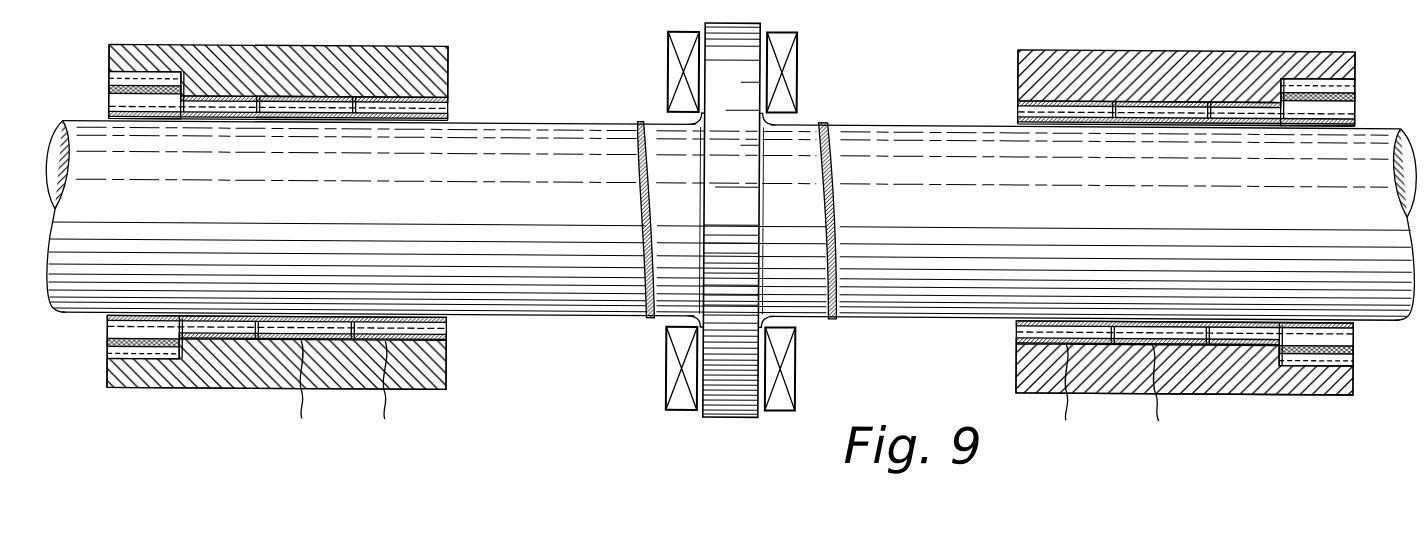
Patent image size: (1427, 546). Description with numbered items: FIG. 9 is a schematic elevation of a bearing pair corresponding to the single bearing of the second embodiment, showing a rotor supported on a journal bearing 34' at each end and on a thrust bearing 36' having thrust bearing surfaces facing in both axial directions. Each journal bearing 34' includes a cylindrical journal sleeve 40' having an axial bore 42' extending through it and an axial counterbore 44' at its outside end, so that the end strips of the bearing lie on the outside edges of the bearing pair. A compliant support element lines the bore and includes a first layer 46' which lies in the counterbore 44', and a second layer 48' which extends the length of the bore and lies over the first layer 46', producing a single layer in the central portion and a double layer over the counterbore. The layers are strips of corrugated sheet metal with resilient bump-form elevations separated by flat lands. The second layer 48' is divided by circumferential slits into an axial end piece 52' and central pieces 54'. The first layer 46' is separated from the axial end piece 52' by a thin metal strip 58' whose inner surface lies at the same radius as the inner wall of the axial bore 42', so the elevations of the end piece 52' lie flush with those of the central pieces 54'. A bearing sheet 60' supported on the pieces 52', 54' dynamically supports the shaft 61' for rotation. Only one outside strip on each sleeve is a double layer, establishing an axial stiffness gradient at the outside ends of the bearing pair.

The journal bearing 34' is at (730, 382).
The thrust bearing 36' is at (768, 221).
The cylindrical journal sleeve 40' is at (730, 393).
The axial bore 42' is at (730, 178).
The axial counterbore 44' is at (731, 186).
The first layer 46' is at (734, 196).
The second layer 48' is at (734, 204).
The axial end piece 52' is at (732, 57).
The central piece 54' is at (735, 394).
The thin metal strip 58' is at (731, 219).
The bearing sheet 60' is at (734, 204).
The shaft 61' is at (703, 220).